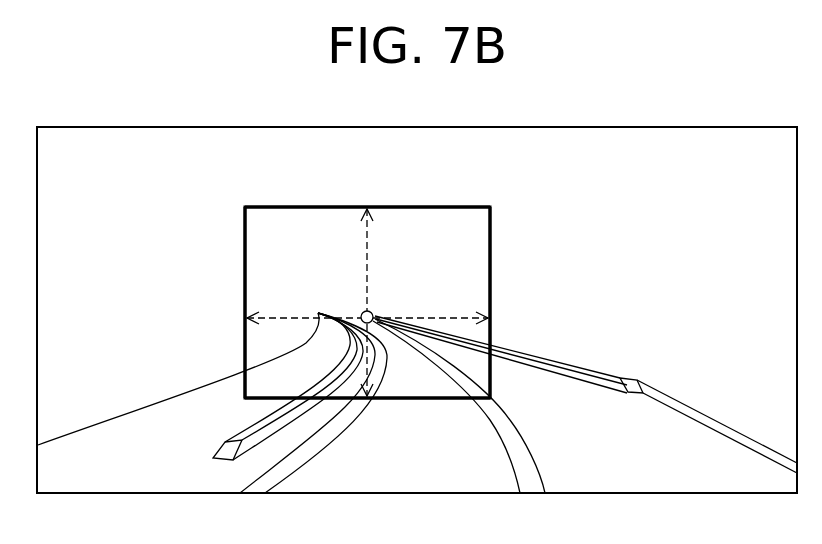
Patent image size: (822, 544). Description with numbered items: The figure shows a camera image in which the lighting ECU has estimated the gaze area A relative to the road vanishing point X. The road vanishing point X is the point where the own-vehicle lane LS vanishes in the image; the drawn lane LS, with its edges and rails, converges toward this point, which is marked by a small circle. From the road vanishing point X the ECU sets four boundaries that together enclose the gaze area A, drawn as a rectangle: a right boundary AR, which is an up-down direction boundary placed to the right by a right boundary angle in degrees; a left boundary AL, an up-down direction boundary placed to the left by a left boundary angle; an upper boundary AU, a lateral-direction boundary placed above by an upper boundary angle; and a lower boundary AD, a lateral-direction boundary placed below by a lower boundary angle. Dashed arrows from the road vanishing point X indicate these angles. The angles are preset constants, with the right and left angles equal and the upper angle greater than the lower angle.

The gaze area A is at (491, 234).
The upper boundary AU is at (445, 206).
The left boundary AL is at (244, 300).
The right boundary AR is at (491, 298).
The lower boundary AD is at (377, 401).
The road vanishing point X is at (372, 312).
The own-vehicle lane LS is at (466, 424).